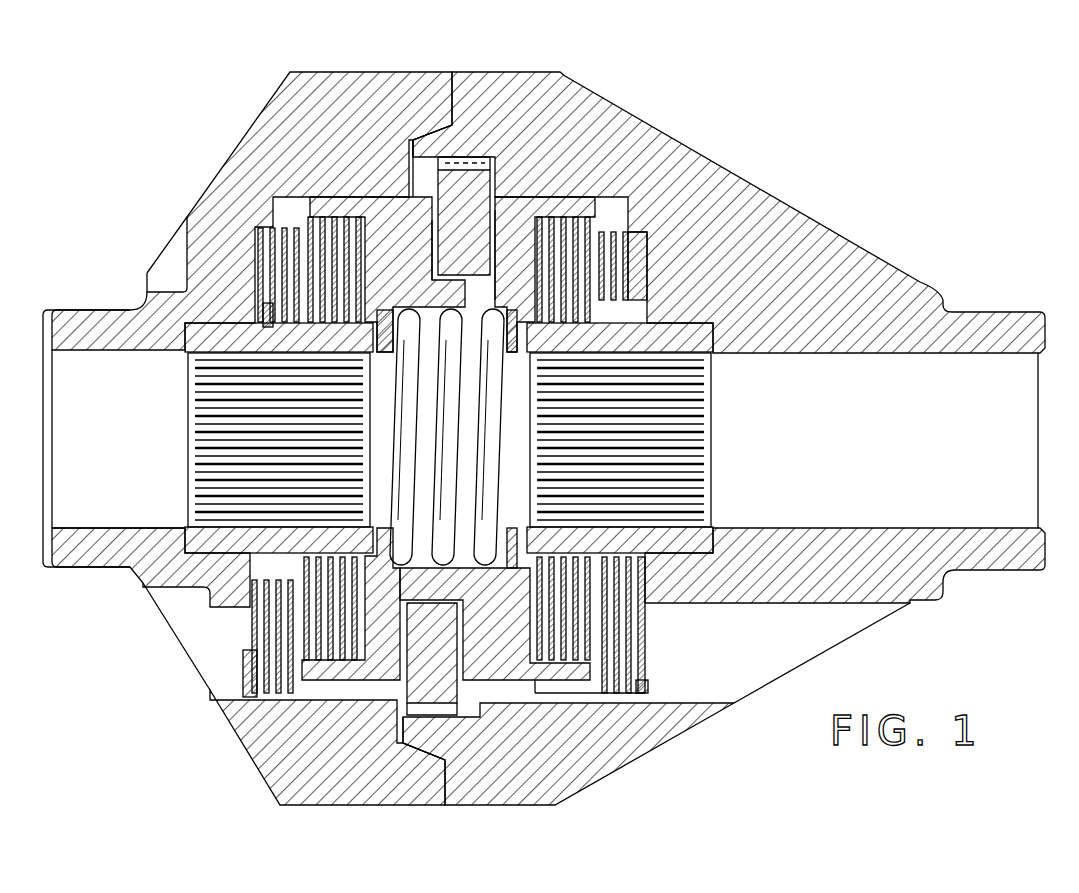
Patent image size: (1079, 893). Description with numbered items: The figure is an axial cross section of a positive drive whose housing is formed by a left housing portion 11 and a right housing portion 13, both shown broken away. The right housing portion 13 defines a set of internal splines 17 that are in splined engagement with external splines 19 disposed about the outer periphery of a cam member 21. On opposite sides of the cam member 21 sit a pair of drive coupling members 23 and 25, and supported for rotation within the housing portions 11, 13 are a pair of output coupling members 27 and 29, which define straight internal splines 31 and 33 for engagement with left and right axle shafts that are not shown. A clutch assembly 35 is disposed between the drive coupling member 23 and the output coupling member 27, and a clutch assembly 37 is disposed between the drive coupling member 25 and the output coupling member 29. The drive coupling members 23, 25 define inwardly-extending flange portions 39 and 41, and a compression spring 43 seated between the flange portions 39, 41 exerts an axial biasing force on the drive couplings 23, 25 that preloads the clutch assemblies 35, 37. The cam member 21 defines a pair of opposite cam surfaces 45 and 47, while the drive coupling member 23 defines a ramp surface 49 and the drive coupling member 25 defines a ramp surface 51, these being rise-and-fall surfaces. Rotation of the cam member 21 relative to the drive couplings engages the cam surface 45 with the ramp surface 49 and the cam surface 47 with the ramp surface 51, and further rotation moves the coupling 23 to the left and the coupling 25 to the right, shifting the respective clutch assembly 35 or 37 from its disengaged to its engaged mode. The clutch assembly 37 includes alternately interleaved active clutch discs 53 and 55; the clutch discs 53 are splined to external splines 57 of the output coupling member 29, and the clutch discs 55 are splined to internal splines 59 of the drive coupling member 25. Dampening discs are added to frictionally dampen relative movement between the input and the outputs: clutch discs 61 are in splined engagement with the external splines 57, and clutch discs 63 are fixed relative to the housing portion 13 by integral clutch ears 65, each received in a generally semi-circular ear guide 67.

The left housing portion 11 is at (243, 183).
The right housing portion 13 is at (777, 220).
The internal splines 17 is at (428, 152).
The external splines 19 is at (492, 163).
The cam member 21 is at (452, 628).
The drive coupling member 23 is at (382, 196).
The drive coupling member 25 is at (540, 205).
The output coupling member 27 is at (222, 345).
The output coupling member 29 is at (705, 548).
The internal splines 31 is at (200, 395).
The internal splines 33 is at (690, 397).
The clutch assembly 35 is at (292, 212).
The clutch assembly 37 is at (610, 212).
The flange portion 39 is at (385, 335).
The flange portion 41 is at (517, 335).
The compression spring 43 is at (475, 563).
The cam surface 45 is at (400, 640).
The cam surface 47 is at (497, 245).
The ramp surface 49 is at (431, 255).
The ramp surface 51 is at (465, 645).
The clutch discs 53 is at (552, 560).
The clutch discs 55 is at (536, 612).
The external splines 57 is at (620, 558).
The internal splines 59 is at (565, 681).
The clutch discs 61 is at (640, 591).
The clutch discs 63 is at (648, 617).
The clutch ears 65 is at (645, 665).
The ear guide 67 is at (648, 683).